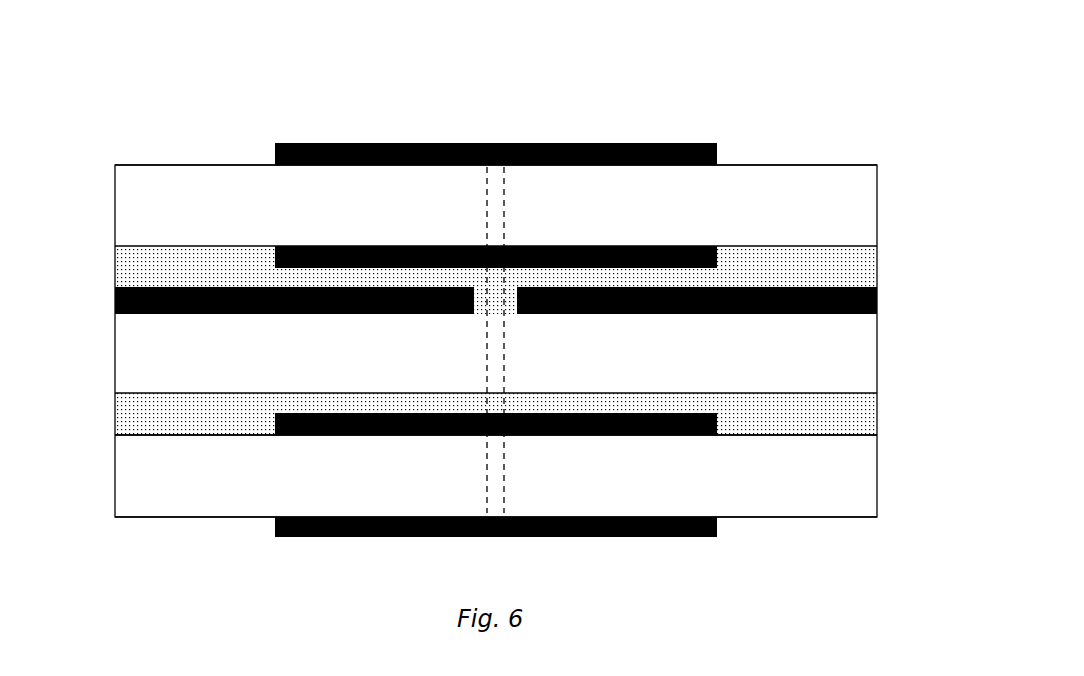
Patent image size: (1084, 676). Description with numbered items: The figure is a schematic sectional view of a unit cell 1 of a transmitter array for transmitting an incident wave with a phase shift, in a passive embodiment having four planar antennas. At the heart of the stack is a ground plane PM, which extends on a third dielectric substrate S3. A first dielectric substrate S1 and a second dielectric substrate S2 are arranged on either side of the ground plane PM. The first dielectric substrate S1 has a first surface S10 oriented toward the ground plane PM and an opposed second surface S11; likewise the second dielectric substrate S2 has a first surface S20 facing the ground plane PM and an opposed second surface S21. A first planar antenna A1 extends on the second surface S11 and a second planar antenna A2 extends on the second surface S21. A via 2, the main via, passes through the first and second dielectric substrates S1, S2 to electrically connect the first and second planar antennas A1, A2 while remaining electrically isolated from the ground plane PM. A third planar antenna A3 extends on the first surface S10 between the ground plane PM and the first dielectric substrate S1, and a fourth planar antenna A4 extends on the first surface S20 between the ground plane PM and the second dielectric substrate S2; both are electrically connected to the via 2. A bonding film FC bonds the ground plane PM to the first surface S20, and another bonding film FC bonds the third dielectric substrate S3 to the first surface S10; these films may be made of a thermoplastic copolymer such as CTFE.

The unit cell 1 is at (805, 130).
The via 2 is at (487, 473).
The first planar antenna A1 is at (582, 537).
The second planar antenna A2 is at (583, 143).
The third planar antenna A3 is at (282, 437).
The fourth planar antenna A4 is at (288, 243).
The bonding film FC is at (130, 268).
The ground plane PM is at (115, 305).
The first dielectric substrate S1 is at (858, 493).
The first surface of the first dielectric substrate S10 is at (855, 437).
The second surface of the first dielectric substrate S11 is at (853, 519).
The second dielectric substrate S2 is at (858, 207).
The first surface of the second dielectric substrate S20 is at (855, 246).
The second surface of the second dielectric substrate S21 is at (855, 165).
The third dielectric substrate S3 is at (858, 363).